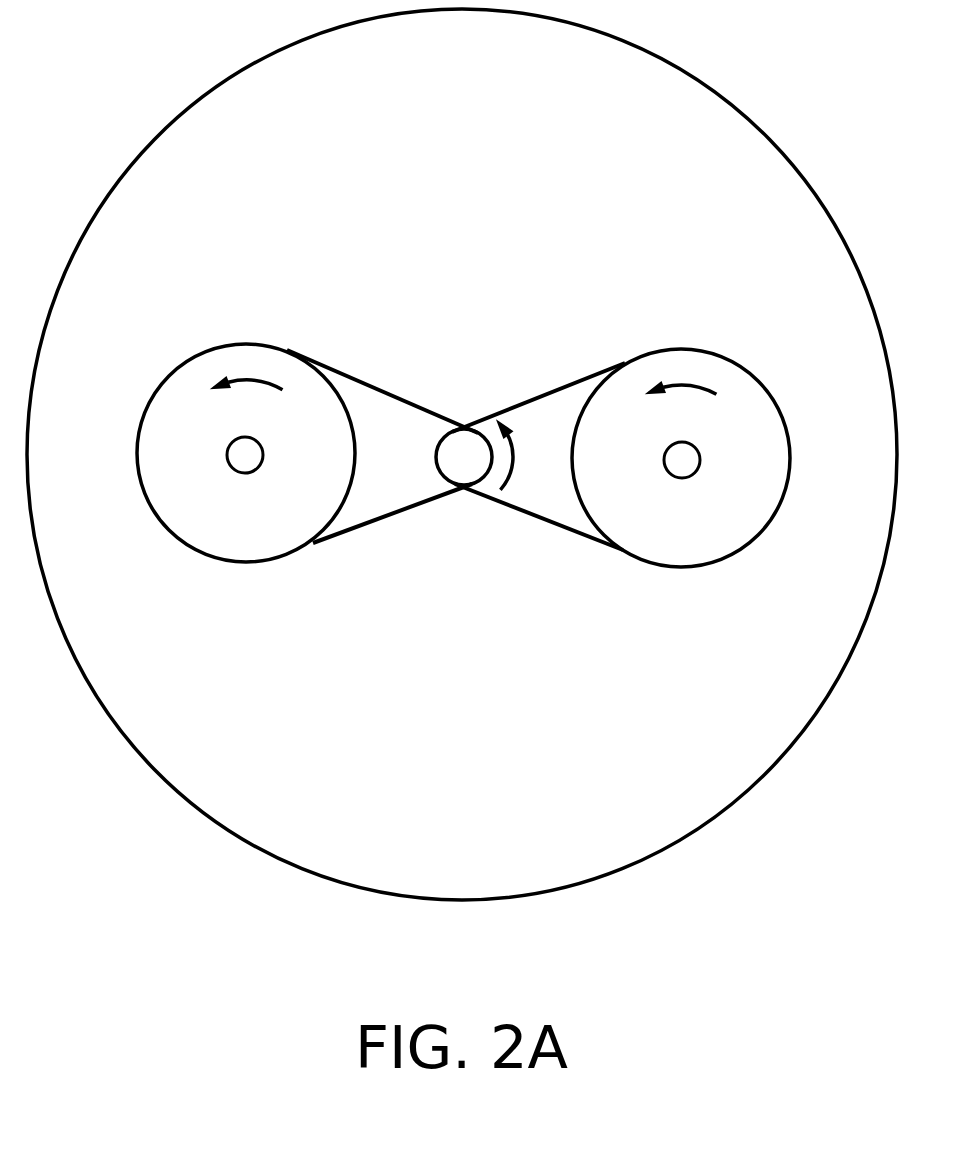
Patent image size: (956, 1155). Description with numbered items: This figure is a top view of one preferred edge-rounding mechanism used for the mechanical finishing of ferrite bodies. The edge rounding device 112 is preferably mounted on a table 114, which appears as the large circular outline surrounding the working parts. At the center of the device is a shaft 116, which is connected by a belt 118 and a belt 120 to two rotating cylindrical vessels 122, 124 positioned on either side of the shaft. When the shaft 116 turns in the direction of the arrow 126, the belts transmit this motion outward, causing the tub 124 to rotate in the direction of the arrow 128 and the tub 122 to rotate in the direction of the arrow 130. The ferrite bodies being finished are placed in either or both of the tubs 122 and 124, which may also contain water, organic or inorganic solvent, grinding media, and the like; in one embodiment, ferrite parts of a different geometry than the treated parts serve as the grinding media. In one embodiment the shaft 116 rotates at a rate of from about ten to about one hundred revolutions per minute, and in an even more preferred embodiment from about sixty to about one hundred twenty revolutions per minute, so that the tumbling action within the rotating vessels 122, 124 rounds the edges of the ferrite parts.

The edge rounding device 112 is at (490, 655).
The table 114 is at (648, 805).
The shaft 116 is at (452, 458).
The belt 118 is at (363, 530).
The belt 120 is at (540, 522).
The rotating cylindrical vessel 122 is at (220, 542).
The rotating cylindrical vessel 124 is at (692, 549).
The arrow 126 is at (517, 463).
The arrow 128 is at (688, 387).
The arrow 130 is at (257, 380).